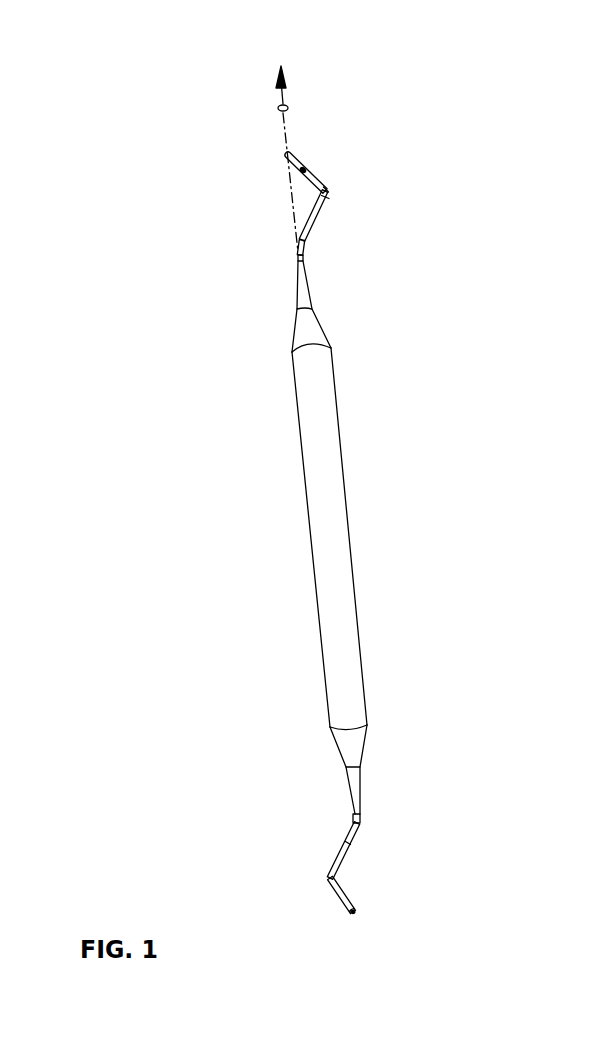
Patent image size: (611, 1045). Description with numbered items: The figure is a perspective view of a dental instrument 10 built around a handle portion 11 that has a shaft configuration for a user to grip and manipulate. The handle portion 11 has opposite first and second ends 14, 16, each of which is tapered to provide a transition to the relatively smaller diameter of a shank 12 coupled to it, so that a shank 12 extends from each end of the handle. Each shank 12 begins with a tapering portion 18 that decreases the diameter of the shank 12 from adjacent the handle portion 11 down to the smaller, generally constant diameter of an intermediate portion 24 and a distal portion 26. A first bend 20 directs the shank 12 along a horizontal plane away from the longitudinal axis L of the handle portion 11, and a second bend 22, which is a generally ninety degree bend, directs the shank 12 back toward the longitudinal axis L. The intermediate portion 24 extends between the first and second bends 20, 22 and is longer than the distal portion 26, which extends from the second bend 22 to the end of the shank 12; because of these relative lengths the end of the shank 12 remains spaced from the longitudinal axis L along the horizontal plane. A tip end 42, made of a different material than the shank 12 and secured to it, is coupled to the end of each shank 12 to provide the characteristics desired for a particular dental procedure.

The dental instrument 10 is at (449, 357).
The longitudinal axis L is at (290, 108).
The handle portion 11 is at (297, 436).
The shank 12 is at (300, 288).
The first end 14 is at (326, 335).
The second end 16 is at (368, 738).
The tapering portion 18 is at (311, 292).
The first bend 20 is at (297, 248).
The second bend 22 is at (332, 194).
The intermediate portion 24 is at (323, 218).
The distal portion 26 is at (318, 182).
The tip end 42 is at (285, 157).